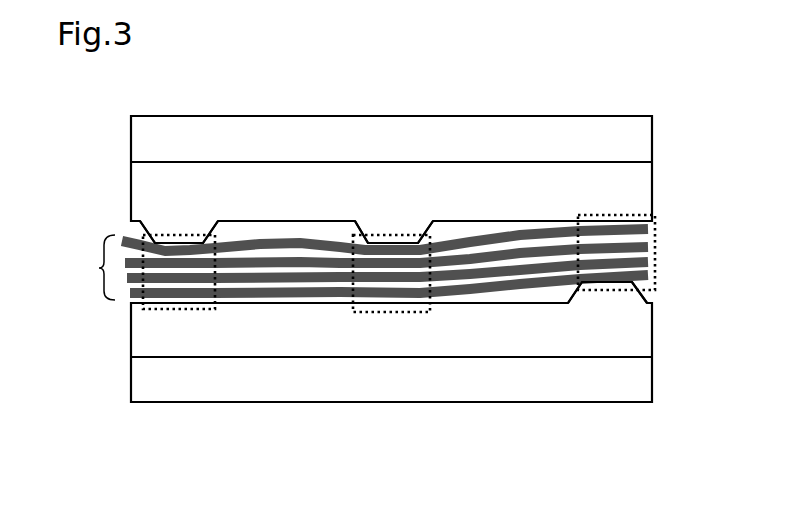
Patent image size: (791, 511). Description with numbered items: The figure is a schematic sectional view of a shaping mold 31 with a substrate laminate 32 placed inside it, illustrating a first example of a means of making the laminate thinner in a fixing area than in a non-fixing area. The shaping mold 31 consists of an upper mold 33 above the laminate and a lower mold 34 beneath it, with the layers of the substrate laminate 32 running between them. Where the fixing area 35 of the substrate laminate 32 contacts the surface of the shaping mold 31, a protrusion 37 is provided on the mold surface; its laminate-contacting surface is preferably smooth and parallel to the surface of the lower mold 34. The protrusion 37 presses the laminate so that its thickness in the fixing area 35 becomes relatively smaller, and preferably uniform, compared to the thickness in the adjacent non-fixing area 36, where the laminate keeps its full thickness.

The shaping mold 31 is at (87, 379).
The substrate laminate 32 is at (88, 281).
The upper mold 33 is at (147, 180).
The lower mold 34 is at (147, 325).
The fixing area 35 is at (175, 313).
The non-fixing area 36 is at (293, 317).
The protrusion 37 is at (188, 228).